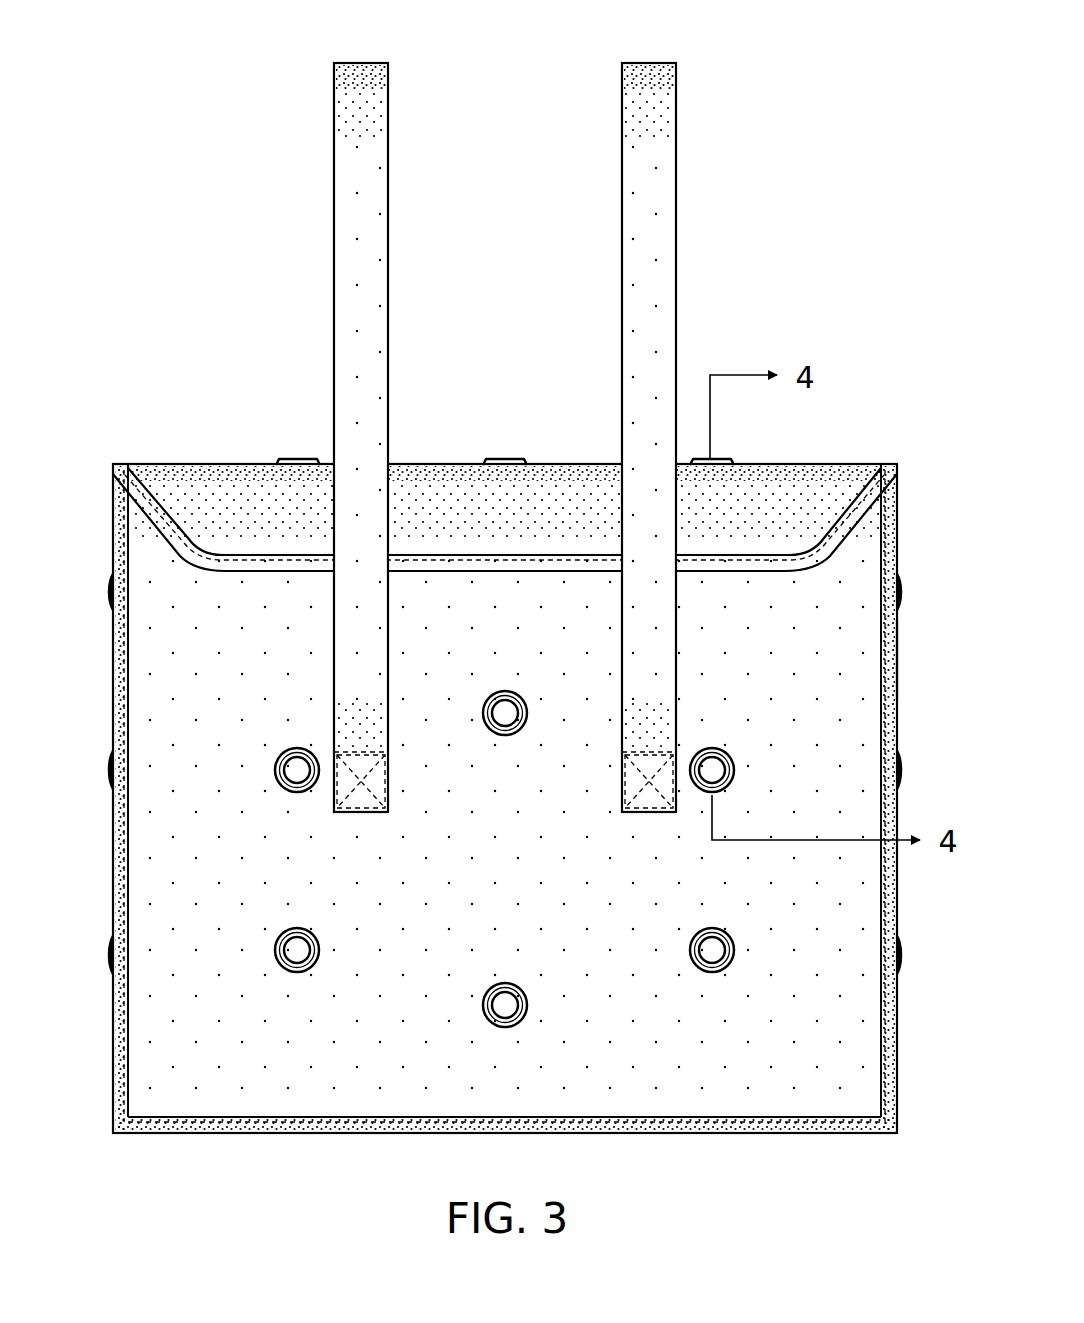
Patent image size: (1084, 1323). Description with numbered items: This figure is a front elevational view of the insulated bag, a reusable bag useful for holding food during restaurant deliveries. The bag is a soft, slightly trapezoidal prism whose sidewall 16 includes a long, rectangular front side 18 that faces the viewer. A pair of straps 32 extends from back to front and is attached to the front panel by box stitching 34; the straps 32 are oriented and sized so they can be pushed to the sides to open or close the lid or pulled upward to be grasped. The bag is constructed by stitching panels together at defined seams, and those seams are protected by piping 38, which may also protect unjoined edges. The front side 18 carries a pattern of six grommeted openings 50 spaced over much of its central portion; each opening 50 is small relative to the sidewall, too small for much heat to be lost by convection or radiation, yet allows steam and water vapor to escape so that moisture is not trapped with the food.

The sidewall 16 is at (160, 690).
The front side 18 is at (155, 1077).
The straps 32 is at (370, 72).
The box stitching 34 is at (360, 804).
The piping 38 is at (892, 657).
The openings 50 is at (293, 459).